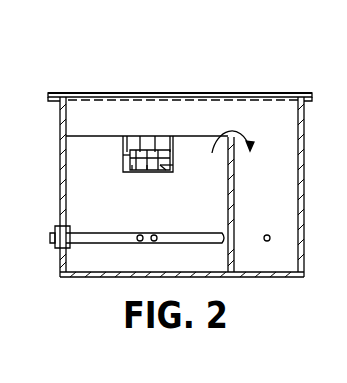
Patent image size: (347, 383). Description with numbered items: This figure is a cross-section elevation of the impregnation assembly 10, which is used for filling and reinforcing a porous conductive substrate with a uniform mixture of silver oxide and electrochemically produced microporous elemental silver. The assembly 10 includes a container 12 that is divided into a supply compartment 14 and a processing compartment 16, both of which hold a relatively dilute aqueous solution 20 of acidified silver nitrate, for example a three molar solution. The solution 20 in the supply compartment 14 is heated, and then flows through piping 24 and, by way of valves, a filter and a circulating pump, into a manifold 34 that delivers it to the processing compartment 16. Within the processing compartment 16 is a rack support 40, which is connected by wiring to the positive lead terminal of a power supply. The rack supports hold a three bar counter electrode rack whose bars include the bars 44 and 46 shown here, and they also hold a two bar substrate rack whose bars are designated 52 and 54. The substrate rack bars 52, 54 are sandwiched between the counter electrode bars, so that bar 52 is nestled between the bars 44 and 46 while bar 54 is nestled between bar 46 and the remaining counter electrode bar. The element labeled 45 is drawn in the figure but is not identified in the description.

The impregnation assembly 10 is at (135, 70).
The container 12 is at (305, 172).
The supply compartment 14 is at (278, 117).
The processing compartment 16 is at (75, 182).
The aqueous solution 20 is at (272, 201).
The piping 24 is at (106, 244).
The manifold 34 is at (152, 244).
The rack support 40 is at (163, 150).
The counter electrode rack bar 44 is at (165, 172).
The clamp member 45 is at (131, 170).
The counter electrode rack bar 46 is at (148, 172).
The substrate rack bar 52 is at (175, 165).
The substrate rack bar 54 is at (124, 156).